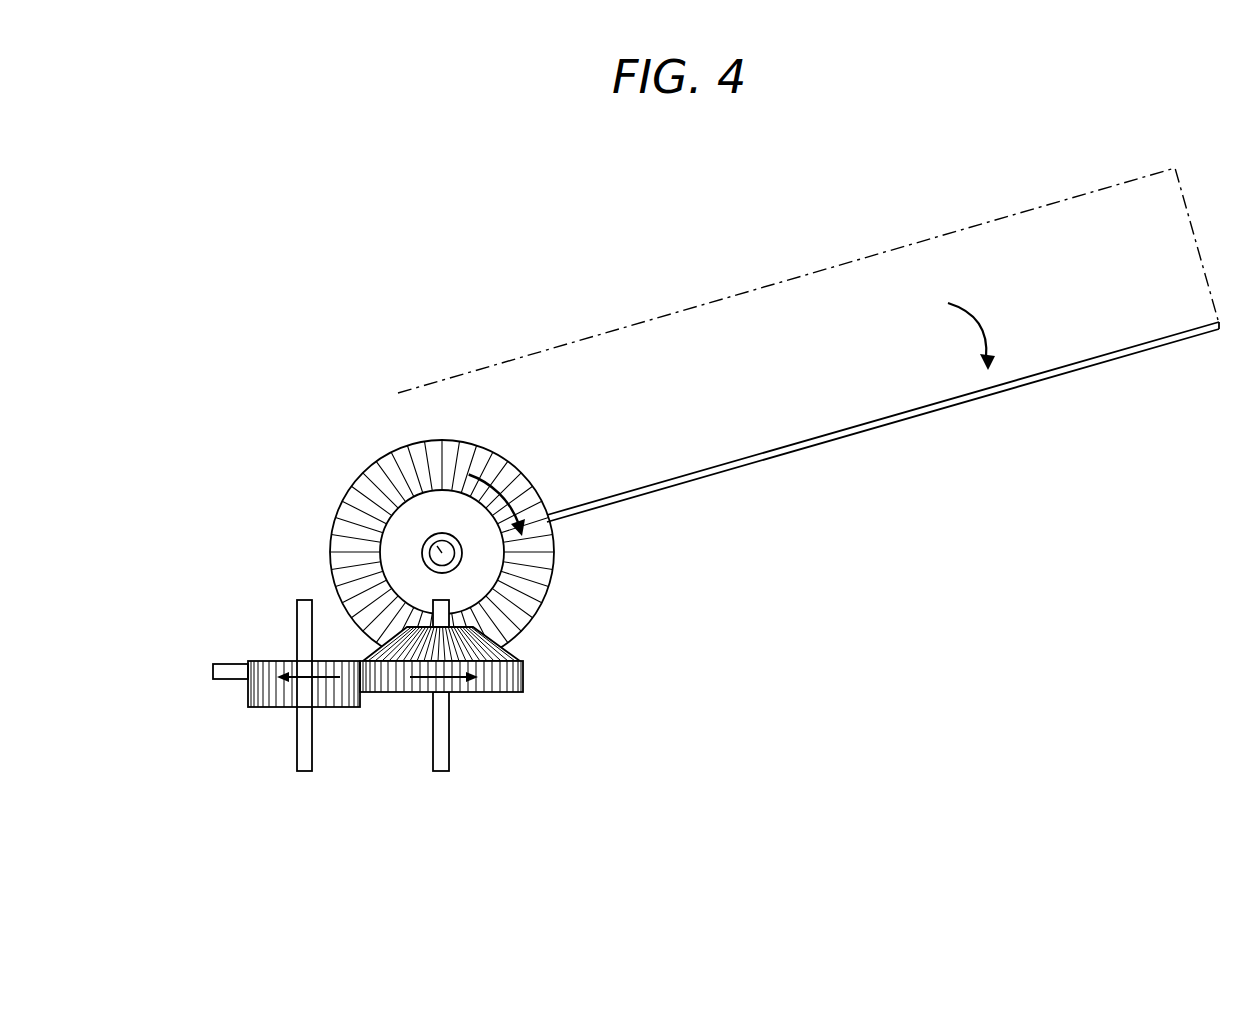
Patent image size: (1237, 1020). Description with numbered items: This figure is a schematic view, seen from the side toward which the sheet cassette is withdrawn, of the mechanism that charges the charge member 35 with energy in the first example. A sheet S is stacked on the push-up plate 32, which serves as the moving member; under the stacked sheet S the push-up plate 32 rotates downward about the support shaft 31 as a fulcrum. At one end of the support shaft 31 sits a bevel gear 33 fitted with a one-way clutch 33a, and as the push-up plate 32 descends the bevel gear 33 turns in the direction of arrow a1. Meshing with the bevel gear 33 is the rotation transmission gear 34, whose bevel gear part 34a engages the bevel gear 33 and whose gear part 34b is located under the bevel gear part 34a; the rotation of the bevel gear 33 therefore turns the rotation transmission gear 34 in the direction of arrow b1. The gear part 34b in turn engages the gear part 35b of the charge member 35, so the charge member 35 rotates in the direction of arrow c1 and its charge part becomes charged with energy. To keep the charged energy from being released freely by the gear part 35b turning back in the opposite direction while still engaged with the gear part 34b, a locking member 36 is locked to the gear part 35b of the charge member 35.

The sheet S is at (723, 300).
The support shaft 31 is at (373, 493).
The push-up plate 32 is at (835, 440).
The bevel gear 33 is at (458, 514).
The one-way clutch 33a is at (438, 549).
The arrow a1 is at (515, 477).
The rotation transmission gear 34 is at (535, 706).
The bevel gear part 34a is at (507, 648).
The gear part 34b is at (503, 680).
The arrow b1 is at (453, 693).
The charge member 35 is at (300, 681).
The gear part 35b is at (272, 693).
The arrow c1 is at (307, 663).
The locking member 36 is at (233, 663).